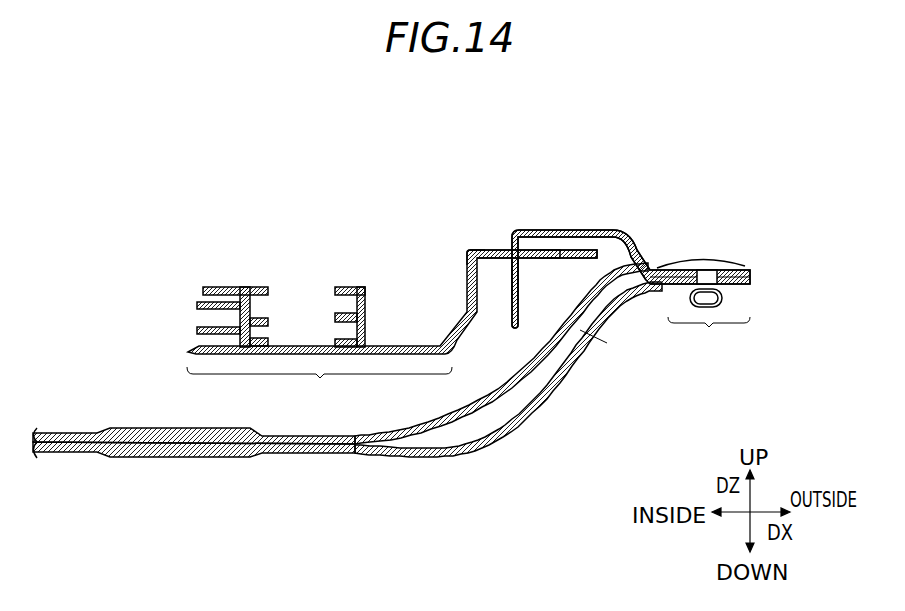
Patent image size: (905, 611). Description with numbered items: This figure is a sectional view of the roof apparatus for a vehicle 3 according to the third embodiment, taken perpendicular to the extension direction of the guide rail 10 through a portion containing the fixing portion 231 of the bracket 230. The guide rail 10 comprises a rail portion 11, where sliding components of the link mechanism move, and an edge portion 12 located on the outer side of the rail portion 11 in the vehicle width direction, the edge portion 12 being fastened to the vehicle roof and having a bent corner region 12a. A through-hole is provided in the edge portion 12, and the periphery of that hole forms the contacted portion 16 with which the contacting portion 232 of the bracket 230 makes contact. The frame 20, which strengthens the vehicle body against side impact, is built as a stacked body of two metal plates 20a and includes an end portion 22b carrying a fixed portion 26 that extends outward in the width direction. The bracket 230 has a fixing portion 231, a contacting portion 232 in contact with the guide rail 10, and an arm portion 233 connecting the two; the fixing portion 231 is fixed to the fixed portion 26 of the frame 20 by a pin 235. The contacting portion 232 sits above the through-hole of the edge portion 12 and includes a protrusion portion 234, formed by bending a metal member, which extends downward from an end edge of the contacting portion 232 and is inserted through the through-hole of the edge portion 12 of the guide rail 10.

The roof apparatus for a vehicle 3 is at (349, 196).
The guide rail 10 is at (184, 359).
The rail portion 11 is at (319, 384).
The edge portion 12 is at (563, 259).
The bent portion 12a is at (505, 247).
The contacted portion 16 is at (548, 244).
The frame 20 is at (354, 360).
The metal plate 20a is at (580, 328).
The end portion 22b is at (709, 335).
The fixed portion 26 is at (746, 286).
The bracket 230 is at (650, 214).
The fixing portion 231 is at (747, 262).
The contacting portion 232 is at (562, 229).
The arm portion 233 is at (632, 233).
The protrusion portion 234 is at (512, 310).
The pin 235 is at (721, 240).